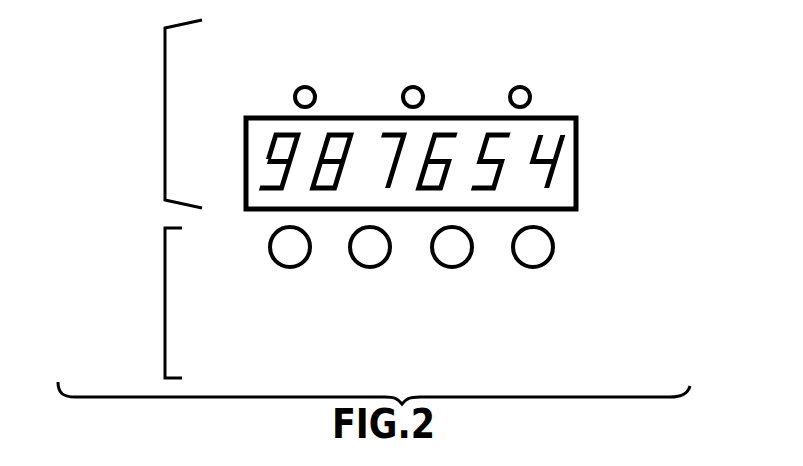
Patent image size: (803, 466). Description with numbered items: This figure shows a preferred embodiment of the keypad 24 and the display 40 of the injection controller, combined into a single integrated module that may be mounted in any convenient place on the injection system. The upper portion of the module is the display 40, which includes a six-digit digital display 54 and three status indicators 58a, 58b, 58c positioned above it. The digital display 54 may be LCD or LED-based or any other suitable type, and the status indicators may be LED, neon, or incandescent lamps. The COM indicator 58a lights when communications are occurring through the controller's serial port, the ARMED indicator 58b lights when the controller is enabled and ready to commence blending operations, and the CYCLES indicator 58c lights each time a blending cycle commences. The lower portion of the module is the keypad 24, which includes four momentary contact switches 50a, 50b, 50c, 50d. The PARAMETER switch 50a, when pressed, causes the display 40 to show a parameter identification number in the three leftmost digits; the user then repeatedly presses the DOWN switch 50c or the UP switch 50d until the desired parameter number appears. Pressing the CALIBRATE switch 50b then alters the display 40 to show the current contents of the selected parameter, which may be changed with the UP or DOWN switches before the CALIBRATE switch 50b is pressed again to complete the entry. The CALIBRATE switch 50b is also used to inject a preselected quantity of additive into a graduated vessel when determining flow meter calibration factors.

The display 40 is at (163, 128).
The digital display 54 is at (578, 178).
The COM indicator 58a is at (314, 92).
The ARMED indicator 58b is at (423, 97).
The CYCLES indicator 58c is at (530, 97).
The keypad 24 is at (163, 287).
The PARAMETER switch 50a is at (274, 258).
The CALIBRATE switch 50b is at (387, 259).
The DOWN switch 50c is at (469, 259).
The UP switch 50d is at (551, 257).